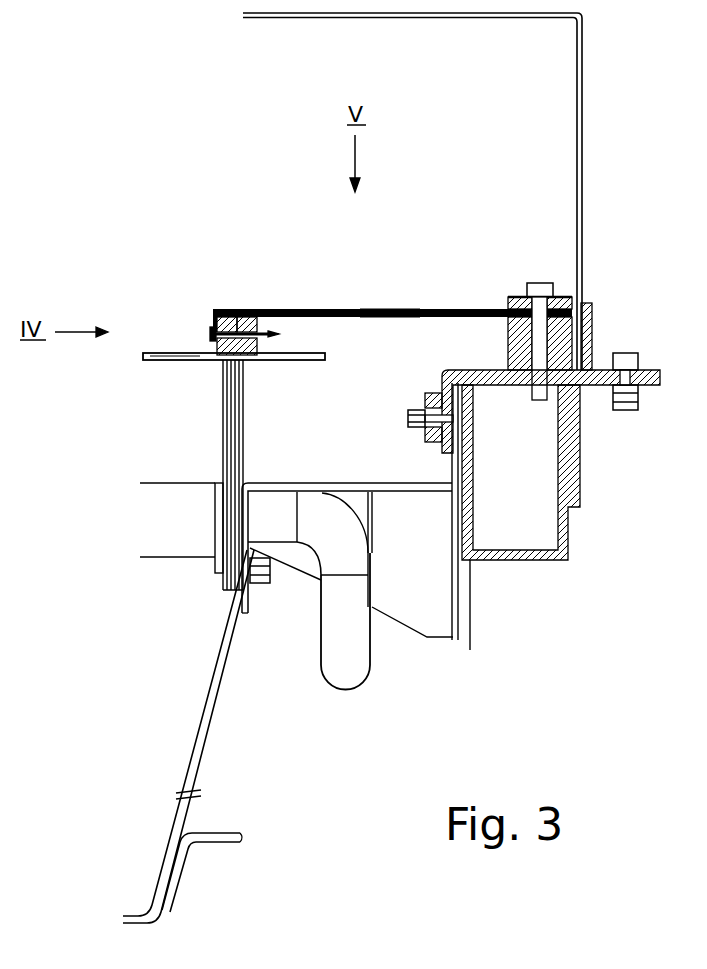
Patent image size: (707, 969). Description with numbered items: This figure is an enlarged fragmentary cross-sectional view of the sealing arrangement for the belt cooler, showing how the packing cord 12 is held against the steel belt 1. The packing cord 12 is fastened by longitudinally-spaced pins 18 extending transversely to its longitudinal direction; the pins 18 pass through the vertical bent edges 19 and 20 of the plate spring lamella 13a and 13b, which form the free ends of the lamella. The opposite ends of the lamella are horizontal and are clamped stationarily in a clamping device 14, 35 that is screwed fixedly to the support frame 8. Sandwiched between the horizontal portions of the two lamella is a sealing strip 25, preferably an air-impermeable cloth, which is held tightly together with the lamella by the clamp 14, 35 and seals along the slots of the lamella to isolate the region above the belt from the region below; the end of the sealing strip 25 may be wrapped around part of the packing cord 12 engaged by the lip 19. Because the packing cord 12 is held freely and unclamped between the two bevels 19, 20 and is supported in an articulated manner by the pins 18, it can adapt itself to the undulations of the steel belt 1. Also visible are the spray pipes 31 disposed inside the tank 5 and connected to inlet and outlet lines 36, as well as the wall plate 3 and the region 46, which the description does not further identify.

The steel belt 1 is at (165, 359).
The side wall plate 3 is at (585, 133).
The tank 5 is at (236, 440).
The support frame 8 is at (567, 555).
The packing cord 12 is at (213, 348).
The plate spring lamella 13a is at (380, 309).
The plate spring lamella 13b is at (398, 318).
The clamping device 14 is at (510, 297).
The pins 18 is at (243, 313).
The bent edge 19 is at (213, 318).
The bent edge 20 is at (258, 339).
The sealing strip 25 is at (315, 308).
The spray pipes 31 is at (183, 530).
The clamping device 35 is at (592, 321).
The inlet and outlet lines 36 is at (352, 643).
The wall region 46 is at (519, 99).